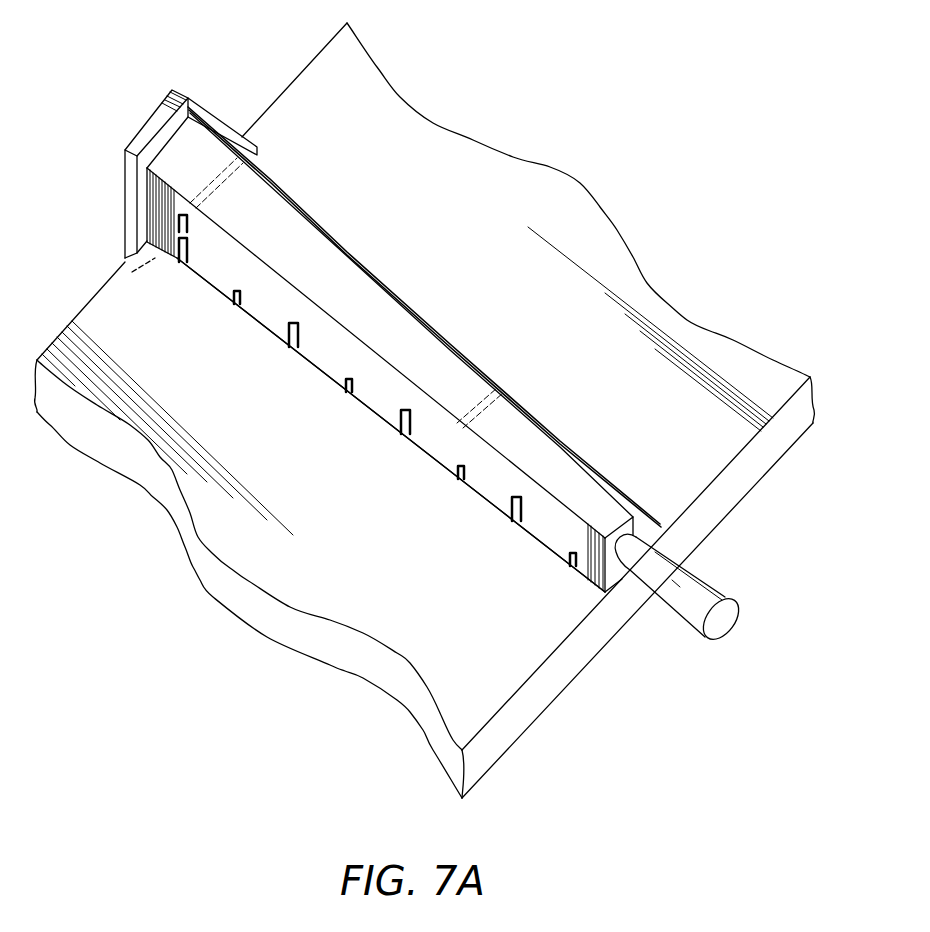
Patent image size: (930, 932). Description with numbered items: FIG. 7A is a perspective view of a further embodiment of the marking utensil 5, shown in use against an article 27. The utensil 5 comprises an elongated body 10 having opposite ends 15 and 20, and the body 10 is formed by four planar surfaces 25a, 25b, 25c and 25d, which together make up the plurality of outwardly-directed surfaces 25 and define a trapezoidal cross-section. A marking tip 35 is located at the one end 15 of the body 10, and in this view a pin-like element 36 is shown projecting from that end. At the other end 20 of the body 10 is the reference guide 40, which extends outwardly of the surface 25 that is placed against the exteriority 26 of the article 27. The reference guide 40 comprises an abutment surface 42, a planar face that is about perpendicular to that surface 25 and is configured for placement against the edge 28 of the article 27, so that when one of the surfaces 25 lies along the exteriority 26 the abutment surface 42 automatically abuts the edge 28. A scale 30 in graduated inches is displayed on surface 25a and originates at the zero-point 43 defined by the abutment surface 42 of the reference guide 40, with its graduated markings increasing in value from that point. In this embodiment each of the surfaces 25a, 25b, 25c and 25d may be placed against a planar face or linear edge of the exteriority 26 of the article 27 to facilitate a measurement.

The marking utensil 5 is at (337, 204).
The elongated body 10 is at (541, 401).
The end 15 is at (628, 621).
The end 20 is at (120, 284).
The outwardly-directed surfaces 25 is at (466, 376).
The planar surface 25a is at (226, 278).
The planar surface 25b is at (332, 385).
The planar surface 25c is at (364, 292).
The planar surface 25d is at (467, 350).
The exteriority 26 is at (429, 399).
The article 27 is at (744, 354).
The edge 28 is at (302, 67).
The scale 30 is at (175, 274).
The marking tip 35 is at (693, 581).
The pin 36 is at (729, 594).
The reference guide 40 is at (140, 148).
The abutment surface 42 is at (203, 116).
The zero-point 43 is at (119, 218).